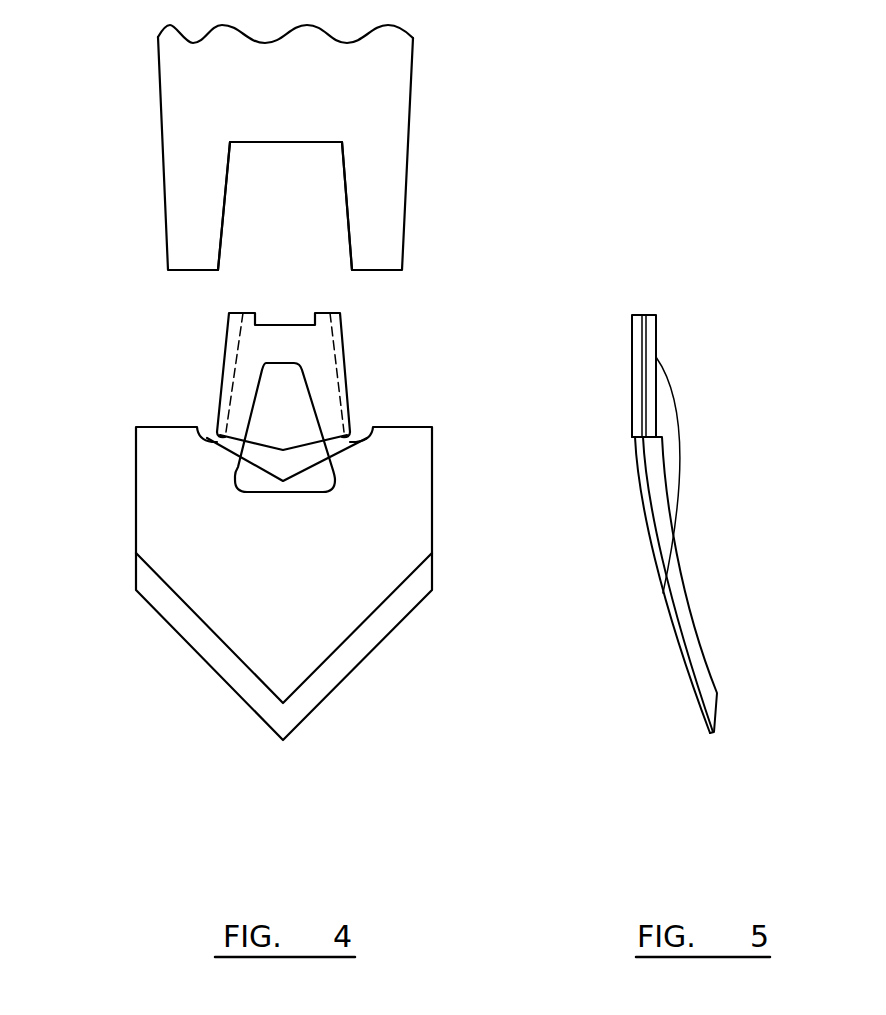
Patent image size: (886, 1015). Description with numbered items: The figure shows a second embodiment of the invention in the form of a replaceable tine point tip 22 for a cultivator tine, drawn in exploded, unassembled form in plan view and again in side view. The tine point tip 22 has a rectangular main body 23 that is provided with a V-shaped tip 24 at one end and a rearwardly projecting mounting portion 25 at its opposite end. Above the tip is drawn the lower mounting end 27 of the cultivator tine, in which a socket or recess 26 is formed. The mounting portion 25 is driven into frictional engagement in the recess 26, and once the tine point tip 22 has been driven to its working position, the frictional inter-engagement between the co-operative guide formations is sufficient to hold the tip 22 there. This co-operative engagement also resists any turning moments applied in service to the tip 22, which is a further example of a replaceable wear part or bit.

In FIG. 4, the tine point tip 22 is at (400, 501).
In FIG. 5, the tine point tip 22 is at (688, 559).
In FIG. 4, the rectangular main body 23 is at (200, 540).
In FIG. 5, the rectangular main body 23 is at (693, 653).
In FIG. 4, the V-shaped tip 24 is at (292, 658).
In FIG. 4, the mounting portion 25 is at (318, 353).
In FIG. 5, the mounting portion 25 is at (653, 340).
In FIG. 4, the recess 26 is at (225, 198).
In FIG. 4, the lower mounting end 27 is at (380, 87).